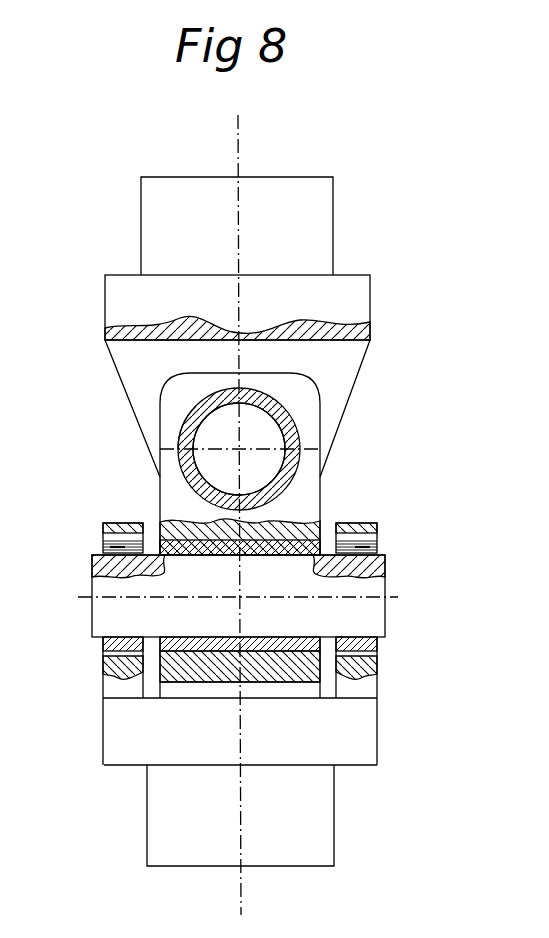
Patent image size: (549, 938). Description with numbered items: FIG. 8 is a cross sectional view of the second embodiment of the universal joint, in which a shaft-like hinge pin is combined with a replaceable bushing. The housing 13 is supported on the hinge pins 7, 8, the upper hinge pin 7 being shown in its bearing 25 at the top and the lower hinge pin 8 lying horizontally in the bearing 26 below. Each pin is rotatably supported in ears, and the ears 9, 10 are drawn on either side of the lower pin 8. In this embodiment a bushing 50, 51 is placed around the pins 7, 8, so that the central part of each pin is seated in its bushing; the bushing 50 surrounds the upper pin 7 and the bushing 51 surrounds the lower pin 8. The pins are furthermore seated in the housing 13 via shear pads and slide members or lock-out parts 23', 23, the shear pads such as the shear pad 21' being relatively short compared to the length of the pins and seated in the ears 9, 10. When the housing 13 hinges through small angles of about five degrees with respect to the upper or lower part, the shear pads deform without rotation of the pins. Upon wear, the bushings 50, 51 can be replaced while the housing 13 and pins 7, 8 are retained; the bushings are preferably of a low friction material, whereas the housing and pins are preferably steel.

The housing 13 is at (290, 392).
The hinge pin 7 is at (262, 436).
The bushing 50 is at (287, 480).
The bearing 25 is at (163, 416).
The ear 9 is at (115, 523).
The ear 10 is at (358, 523).
The shear pad 21' is at (387, 528).
The hinge pin 8 is at (103, 587).
The slide member or lock-out part 23' is at (84, 658).
The slide member or lock-out part 23 is at (385, 658).
The bushing 51 is at (200, 652).
The bearing 26 is at (296, 692).